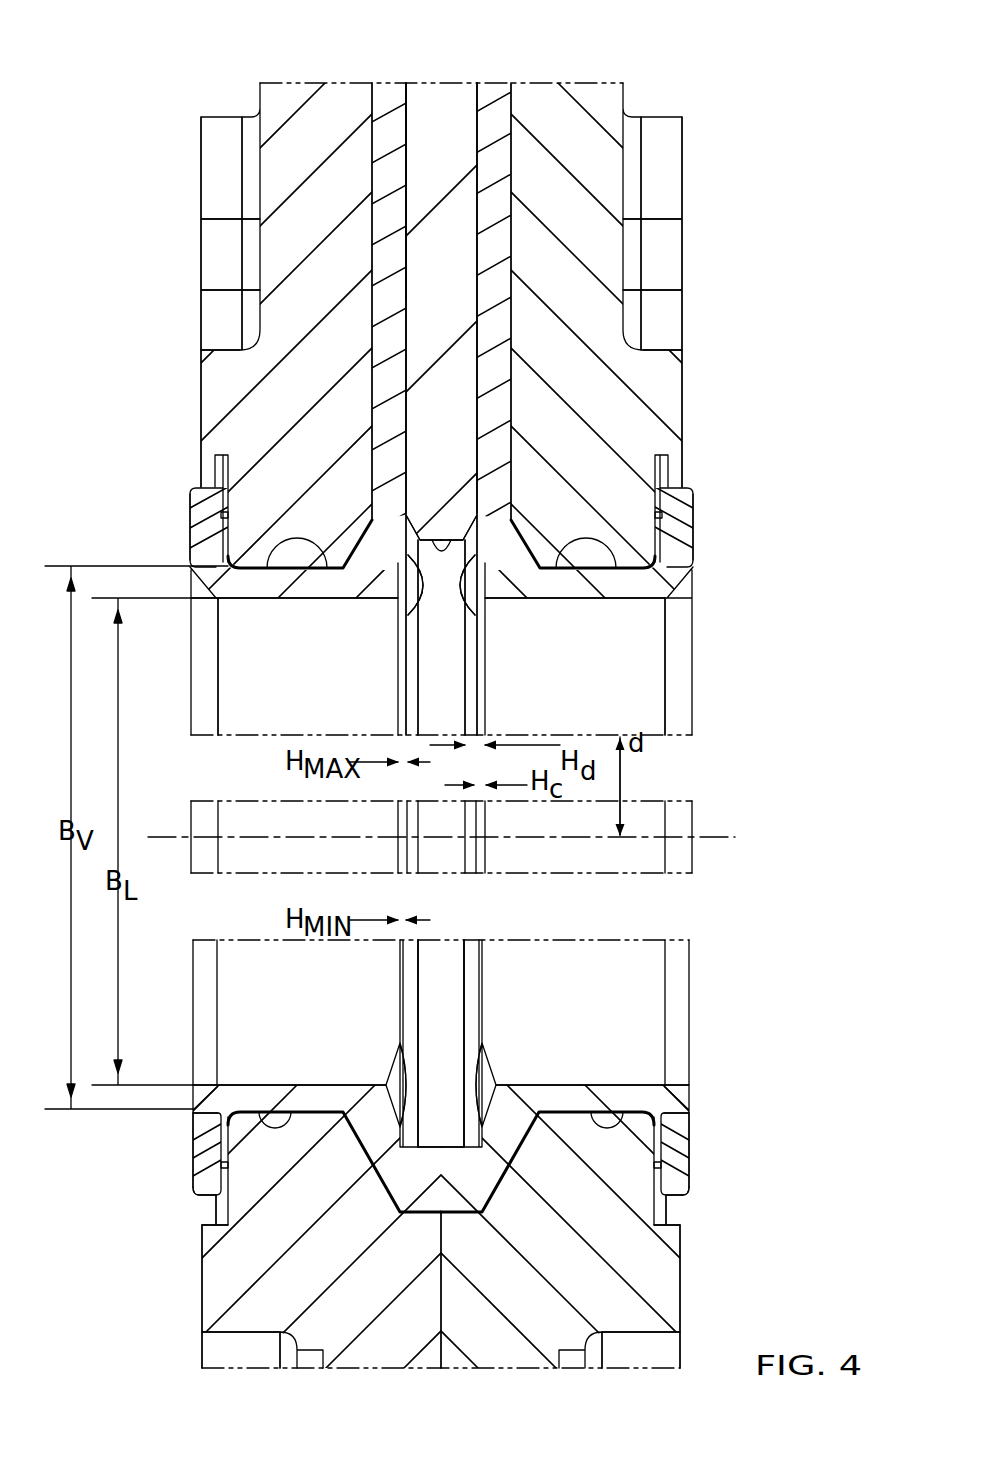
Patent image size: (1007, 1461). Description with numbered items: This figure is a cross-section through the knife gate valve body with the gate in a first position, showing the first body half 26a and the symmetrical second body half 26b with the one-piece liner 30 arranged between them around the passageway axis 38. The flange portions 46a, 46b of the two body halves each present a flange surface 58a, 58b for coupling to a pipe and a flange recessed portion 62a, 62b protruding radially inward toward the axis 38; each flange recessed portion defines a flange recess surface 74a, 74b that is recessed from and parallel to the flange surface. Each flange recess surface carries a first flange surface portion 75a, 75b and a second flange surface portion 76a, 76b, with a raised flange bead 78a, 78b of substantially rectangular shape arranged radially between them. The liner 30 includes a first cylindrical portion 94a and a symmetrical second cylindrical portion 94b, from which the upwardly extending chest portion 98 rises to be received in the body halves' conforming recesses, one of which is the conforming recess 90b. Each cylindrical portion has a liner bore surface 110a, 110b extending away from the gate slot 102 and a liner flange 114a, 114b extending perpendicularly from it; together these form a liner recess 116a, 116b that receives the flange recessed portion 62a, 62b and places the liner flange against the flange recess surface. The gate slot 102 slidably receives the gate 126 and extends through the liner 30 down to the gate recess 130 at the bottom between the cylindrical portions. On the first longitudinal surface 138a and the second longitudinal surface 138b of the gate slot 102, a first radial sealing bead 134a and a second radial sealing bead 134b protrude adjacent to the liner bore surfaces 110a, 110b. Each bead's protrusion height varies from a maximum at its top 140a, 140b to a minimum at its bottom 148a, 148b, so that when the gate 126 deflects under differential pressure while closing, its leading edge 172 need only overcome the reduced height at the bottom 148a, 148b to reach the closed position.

The first body half 26a is at (150, 120).
The second body half 26b is at (692, 96).
The liner 30 is at (642, 972).
The axis 38 is at (700, 837).
The flange portion 46a is at (117, 295).
The flange portion 46b is at (735, 236).
The flange surface 58a is at (207, 352).
The flange surface 58b is at (700, 352).
The flange recessed portion 62a is at (285, 478).
The flange recessed portion 62b is at (597, 478).
The flange recess surface 74a is at (97, 447).
The flange recess surface 74b is at (793, 447).
The first flange surface portion 75a is at (214, 462).
The first flange surface portion 75b is at (669, 462).
The second flange surface portion 76a is at (221, 514).
The second flange surface portion 76b is at (662, 514).
The raised flange bead 78a is at (200, 495).
The raised flange bead 78b is at (690, 495).
The conforming recess 90b is at (512, 150).
The first cylindrical portion 94a is at (235, 608).
The second cylindrical portion 94b is at (645, 608).
The upwardly extending chest portion 98 is at (390, 222).
The gate slot 102 is at (408, 120).
The liner bore surface 110a is at (308, 600).
The liner bore surface 110b is at (598, 600).
The liner flange 114a is at (228, 562).
The liner flange 114b is at (660, 572).
The liner recess 116a is at (262, 600).
The liner recess 116b is at (625, 600).
The gate 126 is at (448, 115).
The gate recess 130 is at (442, 1144).
The first radial sealing bead 134a is at (404, 603).
The second radial sealing bead 134b is at (480, 603).
The first longitudinal surface 138a is at (410, 330).
The second longitudinal surface 138b is at (475, 452).
The top 140a is at (435, 632).
The top 140b is at (448, 678).
The bottom 148a is at (437, 1030).
The bottom 148b is at (460, 985).
The leading edge 172 is at (440, 550).